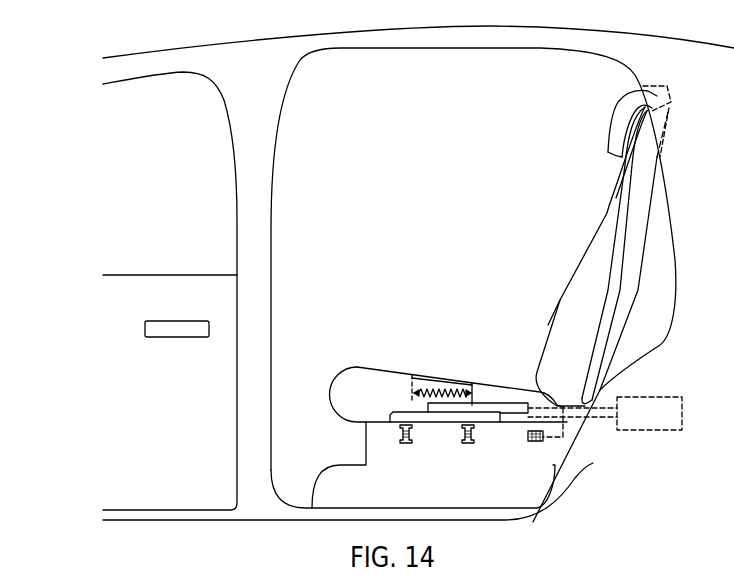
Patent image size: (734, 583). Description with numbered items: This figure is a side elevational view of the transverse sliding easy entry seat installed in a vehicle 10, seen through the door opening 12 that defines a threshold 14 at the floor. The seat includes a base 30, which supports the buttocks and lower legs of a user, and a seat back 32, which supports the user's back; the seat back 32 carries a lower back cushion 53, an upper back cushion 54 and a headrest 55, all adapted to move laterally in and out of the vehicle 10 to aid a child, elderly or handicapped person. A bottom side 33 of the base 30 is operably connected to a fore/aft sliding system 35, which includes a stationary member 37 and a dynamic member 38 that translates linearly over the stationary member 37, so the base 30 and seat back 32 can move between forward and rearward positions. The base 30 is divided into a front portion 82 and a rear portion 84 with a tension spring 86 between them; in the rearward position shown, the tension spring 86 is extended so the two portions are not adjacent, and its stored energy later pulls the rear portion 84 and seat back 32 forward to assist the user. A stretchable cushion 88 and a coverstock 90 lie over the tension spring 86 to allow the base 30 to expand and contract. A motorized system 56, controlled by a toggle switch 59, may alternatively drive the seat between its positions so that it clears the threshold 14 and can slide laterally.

The vehicle 10 is at (108, 43).
The door opening 12 is at (349, 162).
The threshold 14 is at (368, 505).
The base 30 is at (488, 380).
The seat back 32 is at (577, 267).
The bottom side 33 is at (392, 423).
The fore/aft sliding system 35 is at (420, 368).
The stationary member 37 is at (485, 423).
The dynamic member 38 is at (565, 495).
The lower back cushion 53 is at (555, 303).
The upper back cushion 54 is at (613, 185).
The headrest 55 is at (628, 96).
The motorized system 56 is at (668, 395).
The toggle switch 59 is at (543, 437).
The front portion 82 is at (350, 388).
The rear portion 84 is at (500, 397).
The tension spring 86 is at (448, 382).
The stretchable cushion 88 is at (398, 373).
The coverstock 90 is at (477, 383).